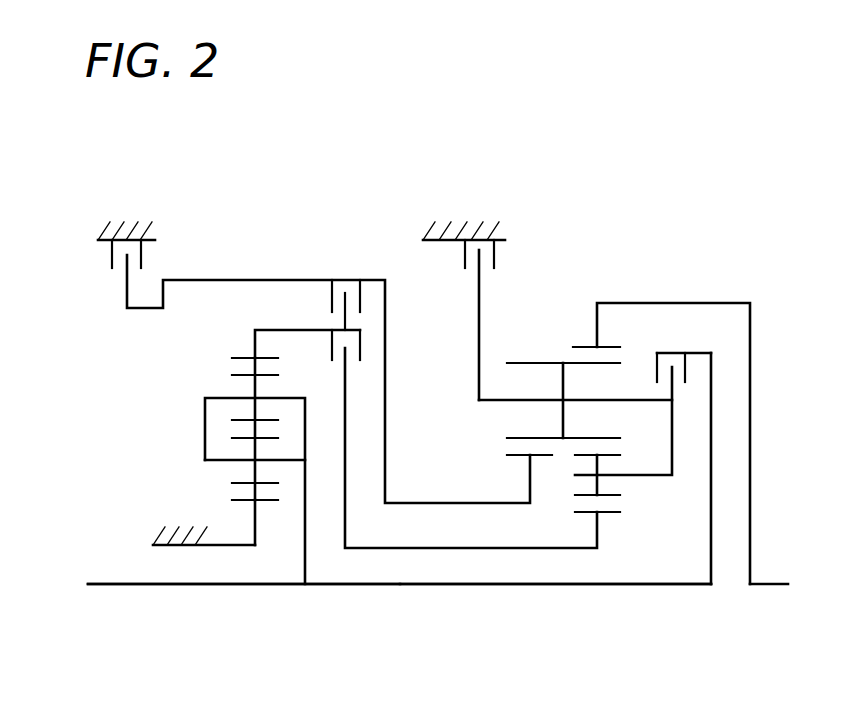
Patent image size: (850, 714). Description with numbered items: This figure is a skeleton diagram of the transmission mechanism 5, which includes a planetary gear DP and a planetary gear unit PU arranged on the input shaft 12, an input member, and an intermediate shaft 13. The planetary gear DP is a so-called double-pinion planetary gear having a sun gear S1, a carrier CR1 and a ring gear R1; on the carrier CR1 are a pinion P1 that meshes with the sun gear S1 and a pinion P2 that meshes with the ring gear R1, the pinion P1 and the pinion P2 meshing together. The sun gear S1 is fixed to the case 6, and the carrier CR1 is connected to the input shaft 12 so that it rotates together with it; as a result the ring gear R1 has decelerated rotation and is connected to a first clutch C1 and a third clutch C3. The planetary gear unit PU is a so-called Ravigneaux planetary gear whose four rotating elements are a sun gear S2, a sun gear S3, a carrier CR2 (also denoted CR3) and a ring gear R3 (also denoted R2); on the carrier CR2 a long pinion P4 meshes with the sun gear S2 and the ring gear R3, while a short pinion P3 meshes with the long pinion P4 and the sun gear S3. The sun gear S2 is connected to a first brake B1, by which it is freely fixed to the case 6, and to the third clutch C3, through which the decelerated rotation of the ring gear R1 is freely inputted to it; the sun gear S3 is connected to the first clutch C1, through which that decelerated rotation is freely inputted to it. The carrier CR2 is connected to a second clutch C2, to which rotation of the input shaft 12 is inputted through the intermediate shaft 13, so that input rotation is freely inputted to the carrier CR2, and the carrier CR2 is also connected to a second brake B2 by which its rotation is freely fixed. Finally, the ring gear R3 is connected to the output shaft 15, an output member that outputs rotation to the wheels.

The transmission mechanism 5 is at (360, 212).
The case 6 is at (150, 226).
The input shaft 12 is at (168, 588).
The intermediate shaft 13 is at (484, 588).
The output shaft 15 is at (770, 583).
The first brake B1 is at (126, 229).
The second brake B2 is at (479, 295).
The first clutch C1 is at (426, 427).
The second clutch C2 is at (684, 454).
The third clutch C3 is at (346, 293).
The planetary gear DP is at (271, 312).
The ring gear R1 is at (248, 355).
The pinion P2 is at (279, 378).
The carrier CR1 is at (205, 404).
The pinion P1 is at (243, 481).
The sun gear S1 is at (262, 505).
The planetary gear unit PU is at (543, 350).
The ring gear R3 is at (649, 424).
The ring gear R2 is at (585, 347).
The long pinion P4 is at (578, 368).
The carrier CR2 is at (663, 421).
The carrier CR3 is at (674, 430).
The sun gear S2 is at (541, 460).
The short pinion P3 is at (612, 487).
The sun gear S3 is at (610, 517).